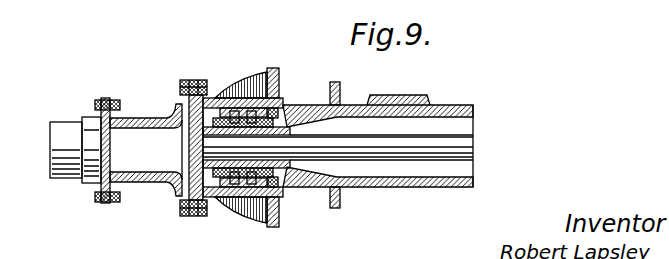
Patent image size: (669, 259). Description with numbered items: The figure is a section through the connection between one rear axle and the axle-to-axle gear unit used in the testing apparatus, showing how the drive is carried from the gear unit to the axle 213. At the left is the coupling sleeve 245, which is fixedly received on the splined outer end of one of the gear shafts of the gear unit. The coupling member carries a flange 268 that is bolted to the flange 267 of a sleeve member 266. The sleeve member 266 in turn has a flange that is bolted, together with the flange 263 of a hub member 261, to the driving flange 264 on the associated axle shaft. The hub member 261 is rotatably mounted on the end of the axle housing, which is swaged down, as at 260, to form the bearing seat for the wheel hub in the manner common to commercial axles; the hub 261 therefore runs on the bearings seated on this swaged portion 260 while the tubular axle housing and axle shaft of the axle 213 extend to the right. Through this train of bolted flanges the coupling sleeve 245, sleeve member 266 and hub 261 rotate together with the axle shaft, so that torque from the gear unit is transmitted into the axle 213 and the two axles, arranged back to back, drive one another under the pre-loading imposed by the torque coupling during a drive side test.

The axle 213 is at (307, 186).
The coupling sleeve 245 is at (62, 135).
The swaged-down end of axle housing 260 is at (256, 77).
The hub member 261 is at (220, 97).
The hub flange 263 is at (200, 217).
The driving flange 264 is at (193, 80).
The sleeve member 266 is at (140, 122).
The sleeve member flange 267 is at (113, 100).
The coupling member flange 268 is at (98, 101).